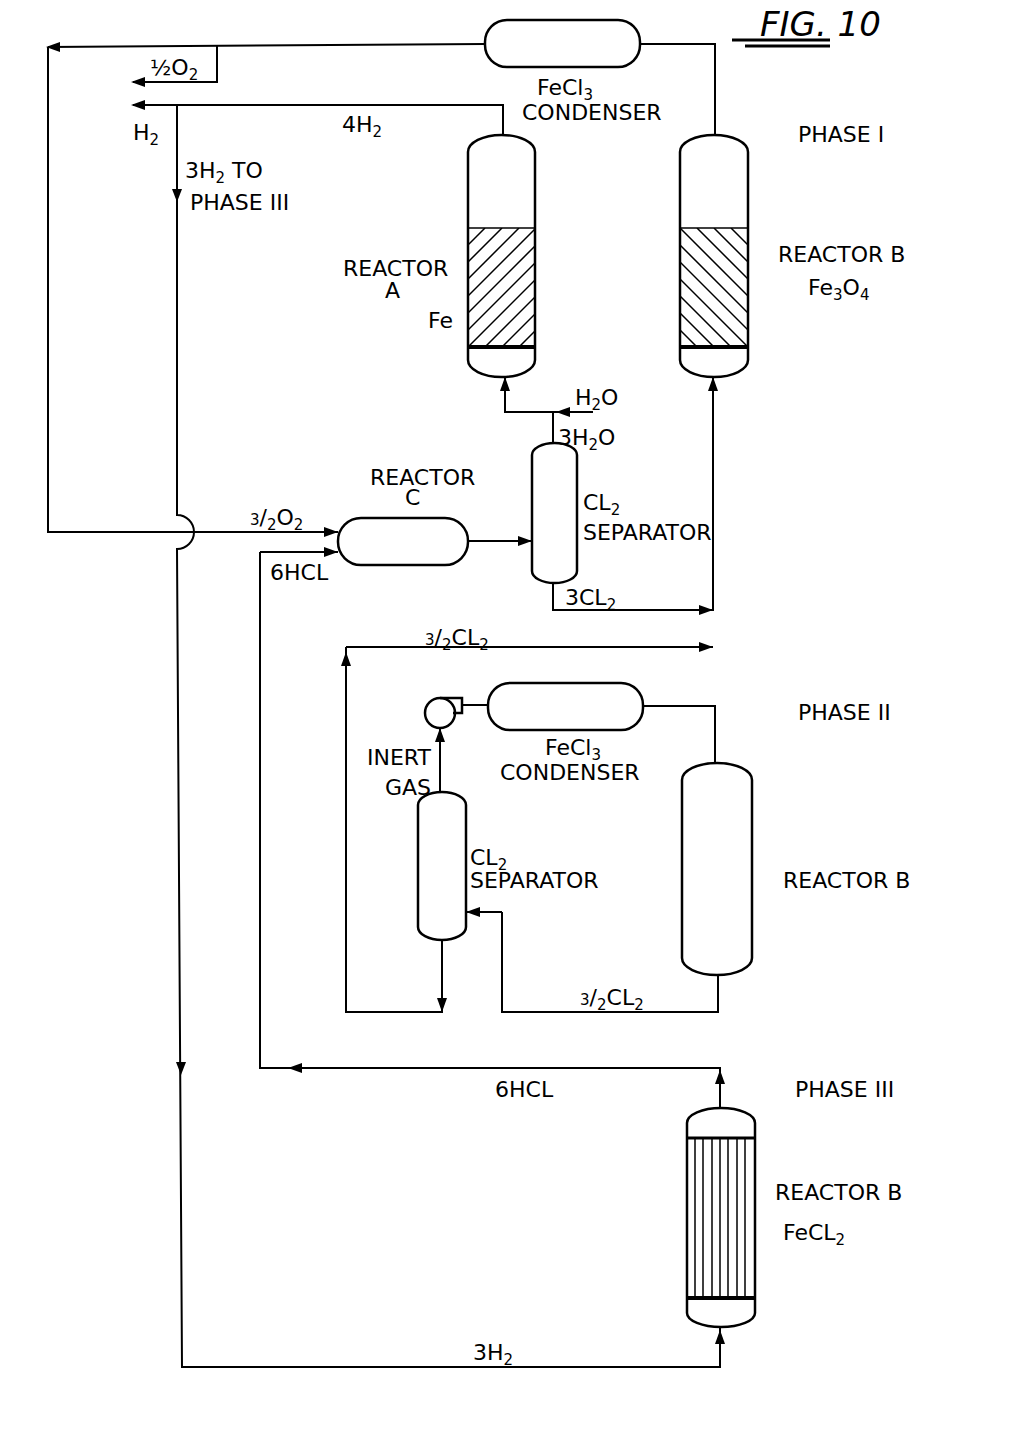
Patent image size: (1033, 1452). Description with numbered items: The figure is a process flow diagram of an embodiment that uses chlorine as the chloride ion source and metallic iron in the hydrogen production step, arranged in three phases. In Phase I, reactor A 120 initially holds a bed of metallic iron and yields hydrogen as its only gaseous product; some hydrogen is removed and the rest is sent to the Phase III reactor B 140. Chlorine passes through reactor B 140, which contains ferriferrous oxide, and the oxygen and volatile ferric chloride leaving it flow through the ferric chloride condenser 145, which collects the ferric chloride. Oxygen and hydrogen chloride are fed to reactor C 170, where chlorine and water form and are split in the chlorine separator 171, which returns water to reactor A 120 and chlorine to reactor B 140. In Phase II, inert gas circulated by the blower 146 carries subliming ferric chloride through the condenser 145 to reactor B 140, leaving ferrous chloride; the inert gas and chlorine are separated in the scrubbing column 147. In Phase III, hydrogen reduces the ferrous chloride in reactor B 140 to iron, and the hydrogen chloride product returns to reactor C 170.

The reactor A 120 is at (535, 180).
The reactor B 140 is at (748, 197).
The ferric chloride condenser 145 is at (632, 26).
The blower 146 is at (436, 698).
The scrubbing column 147 is at (466, 820).
The reactor C 170 is at (387, 565).
The chlorine separator 171 is at (577, 475).